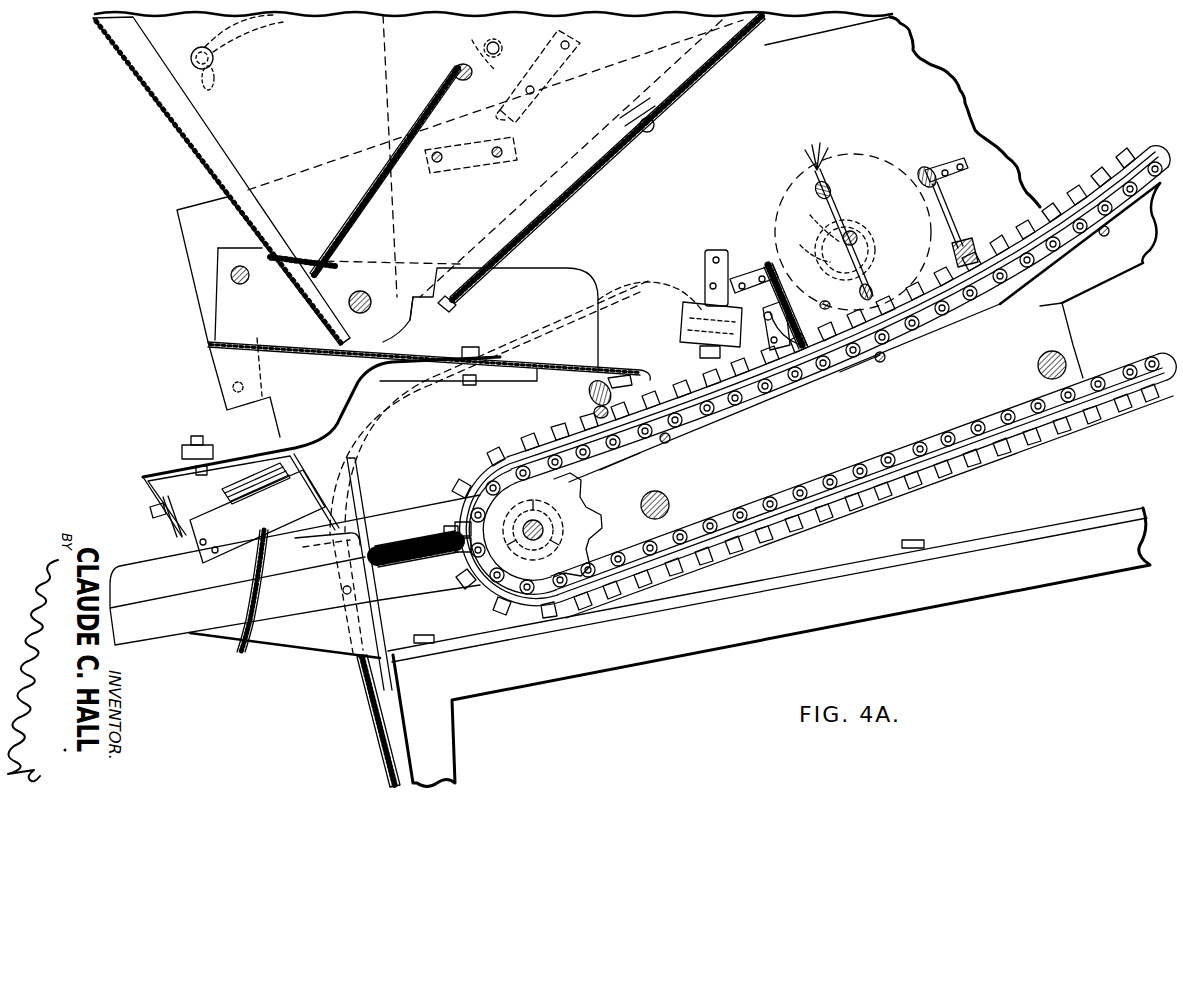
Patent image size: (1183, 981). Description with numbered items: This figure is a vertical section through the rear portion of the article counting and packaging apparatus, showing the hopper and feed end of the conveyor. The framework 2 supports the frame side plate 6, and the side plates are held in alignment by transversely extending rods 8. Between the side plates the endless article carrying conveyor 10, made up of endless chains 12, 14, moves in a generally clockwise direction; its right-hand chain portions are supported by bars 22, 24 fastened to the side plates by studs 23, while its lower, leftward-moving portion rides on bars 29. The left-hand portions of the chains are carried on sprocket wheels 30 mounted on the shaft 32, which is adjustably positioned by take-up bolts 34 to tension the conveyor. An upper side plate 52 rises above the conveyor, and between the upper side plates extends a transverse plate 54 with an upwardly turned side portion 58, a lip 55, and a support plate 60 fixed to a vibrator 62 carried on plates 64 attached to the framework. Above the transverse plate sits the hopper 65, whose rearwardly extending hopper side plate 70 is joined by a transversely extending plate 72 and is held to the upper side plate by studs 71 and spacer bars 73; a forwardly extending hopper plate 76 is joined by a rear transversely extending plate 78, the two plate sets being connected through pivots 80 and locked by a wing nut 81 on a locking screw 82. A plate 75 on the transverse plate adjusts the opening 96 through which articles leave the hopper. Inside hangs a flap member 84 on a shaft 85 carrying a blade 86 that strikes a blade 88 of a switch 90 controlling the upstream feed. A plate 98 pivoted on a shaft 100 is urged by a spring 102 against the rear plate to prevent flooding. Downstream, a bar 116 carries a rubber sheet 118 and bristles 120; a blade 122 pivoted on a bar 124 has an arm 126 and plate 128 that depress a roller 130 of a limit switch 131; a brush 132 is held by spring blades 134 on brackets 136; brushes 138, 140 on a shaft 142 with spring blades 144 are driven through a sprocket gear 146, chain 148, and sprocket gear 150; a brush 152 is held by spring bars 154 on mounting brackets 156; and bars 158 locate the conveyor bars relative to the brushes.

The framework 2 is at (960, 601).
The frame side plate 6 is at (948, 382).
The transversely extending rod 8 is at (648, 500).
The endless article carrying conveyor 10 is at (482, 461).
The endless chain 12 is at (722, 428).
The endless chain 14 is at (656, 447).
The bar 22 is at (1046, 302).
The stud 23 is at (670, 443).
The bar 24 is at (1133, 238).
The bar 29 is at (900, 498).
The sprocket wheel 30 is at (560, 490).
The shaft 32 is at (575, 494).
The take-up bolt 34 is at (414, 545).
The upper side plate 52 is at (716, 169).
The transverse plate 54 is at (278, 340).
The lip 55 is at (645, 371).
The upwardly turned side portion 58 is at (527, 308).
The support plate 60 is at (340, 404).
The vibrator 62 is at (278, 518).
The plate 64 is at (303, 650).
The hopper 65 is at (78, 131).
The hopper side plate 70 is at (656, 57).
The stud 71 is at (437, 164).
The transversely extending plate 72 is at (670, 116).
The spacer bar 73 is at (494, 160).
The plate 75 is at (432, 312).
The hopper plate 76 is at (135, 45).
The transversely extending plate 78 is at (150, 93).
The pivot 80 is at (358, 303).
The wing nut 81 is at (220, 78).
The locking screw 82 is at (195, 50).
The flap member 84 is at (392, 178).
The shaft 85 is at (463, 82).
The blade 86 is at (478, 58).
The blade 88 is at (505, 155).
The switch 90 is at (578, 83).
The opening 96 is at (418, 325).
The plate 98 is at (290, 288).
The shaft 100 is at (335, 344).
The spring 102 is at (348, 258).
The bar 116 is at (582, 394).
The rubber sheet 118 is at (622, 365).
The bristles 120 is at (588, 412).
The blade 122 is at (788, 314).
The bar 124 is at (790, 302).
The arm 126 is at (750, 278).
The plate 128 is at (688, 300).
The roller 130 is at (708, 252).
The limit switch 131 is at (710, 358).
The brush 132 is at (862, 366).
The spring blade 134 is at (820, 307).
The bracket 136 is at (768, 262).
The brush 138 is at (830, 185).
The brush 140 is at (870, 252).
The shaft 142 is at (858, 236).
The spring blade 144 is at (855, 220).
The sprocket gear 146 is at (812, 215).
The chain 148 is at (805, 246).
The sprocket gear 150 is at (596, 520).
The brush 152 is at (975, 246).
The spring bar 154 is at (958, 226).
The mounting bracket 156 is at (945, 161).
The bar 158 is at (522, 438).